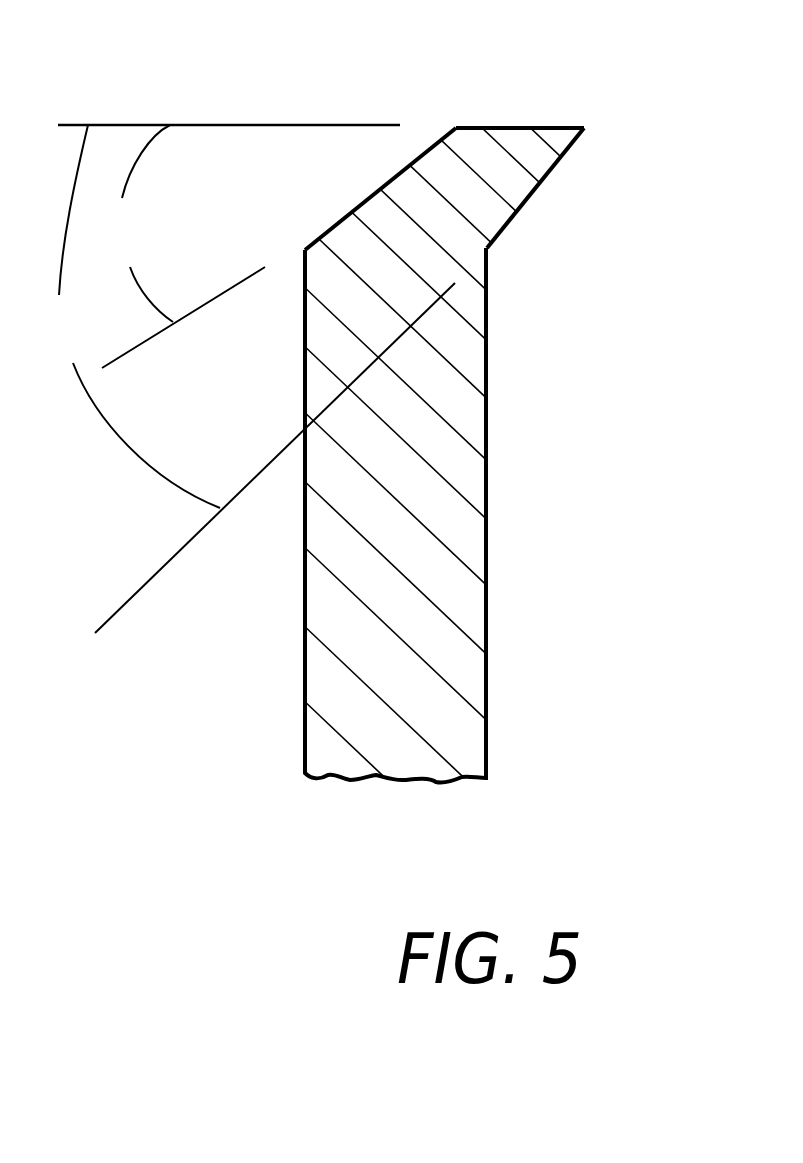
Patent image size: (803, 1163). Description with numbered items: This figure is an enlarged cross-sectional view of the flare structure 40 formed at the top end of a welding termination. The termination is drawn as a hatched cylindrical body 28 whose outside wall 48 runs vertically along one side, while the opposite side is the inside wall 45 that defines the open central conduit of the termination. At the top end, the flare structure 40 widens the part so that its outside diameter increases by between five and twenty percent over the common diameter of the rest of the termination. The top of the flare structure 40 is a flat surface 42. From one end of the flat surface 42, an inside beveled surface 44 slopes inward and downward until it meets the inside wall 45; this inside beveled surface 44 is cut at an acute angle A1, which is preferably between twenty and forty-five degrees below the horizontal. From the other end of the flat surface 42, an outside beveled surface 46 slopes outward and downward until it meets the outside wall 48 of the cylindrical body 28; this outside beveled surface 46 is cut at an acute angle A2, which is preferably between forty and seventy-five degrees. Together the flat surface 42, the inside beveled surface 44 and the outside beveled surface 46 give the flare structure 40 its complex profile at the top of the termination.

The cylindrical body 28 is at (450, 515).
The flare structure 40 is at (475, 134).
The flat surface 42 is at (510, 127).
The inside beveled surface 44 is at (370, 192).
The outside beveled surface 46 is at (500, 258).
The outside wall 48 is at (543, 513).
The inside wall 45 is at (305, 527).
The acute angle A1 is at (229, 246).
The acute angle A2 is at (126, 316).